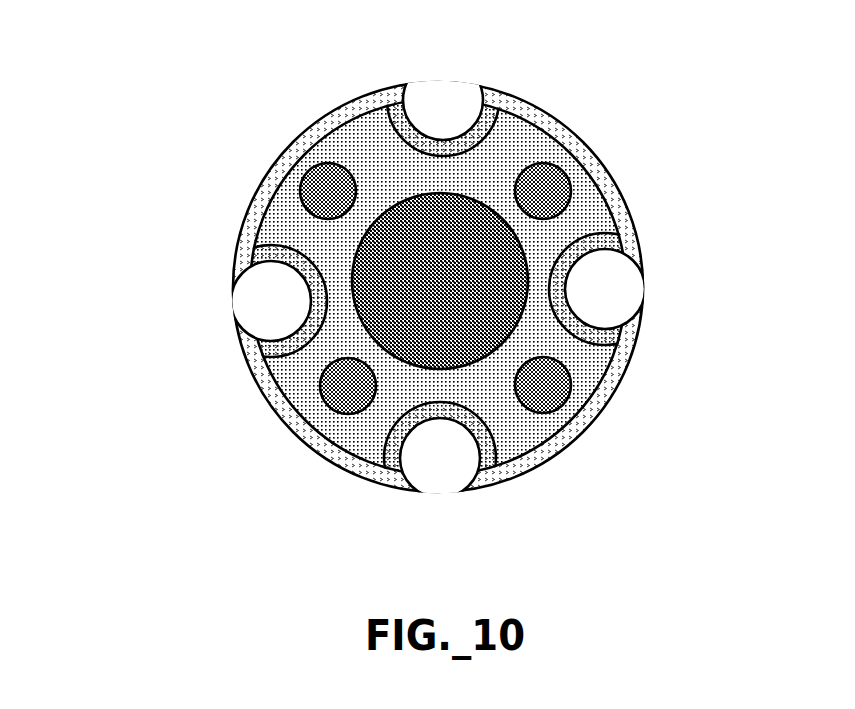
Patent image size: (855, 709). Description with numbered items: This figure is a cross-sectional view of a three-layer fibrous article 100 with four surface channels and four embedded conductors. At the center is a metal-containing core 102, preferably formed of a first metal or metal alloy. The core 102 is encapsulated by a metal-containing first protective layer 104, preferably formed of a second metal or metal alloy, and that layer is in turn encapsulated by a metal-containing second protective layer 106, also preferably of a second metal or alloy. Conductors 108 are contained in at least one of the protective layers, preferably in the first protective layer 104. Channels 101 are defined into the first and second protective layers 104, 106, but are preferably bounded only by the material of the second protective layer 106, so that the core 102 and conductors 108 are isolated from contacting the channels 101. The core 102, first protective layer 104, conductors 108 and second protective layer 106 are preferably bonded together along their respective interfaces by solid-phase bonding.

The fibrous article 100 is at (401, 284).
The channels 101 is at (611, 283).
The metal-containing core 102 is at (457, 248).
The first protective layer 104 is at (584, 206).
The second protective layer 106 is at (614, 386).
The conductors 108 is at (548, 393).